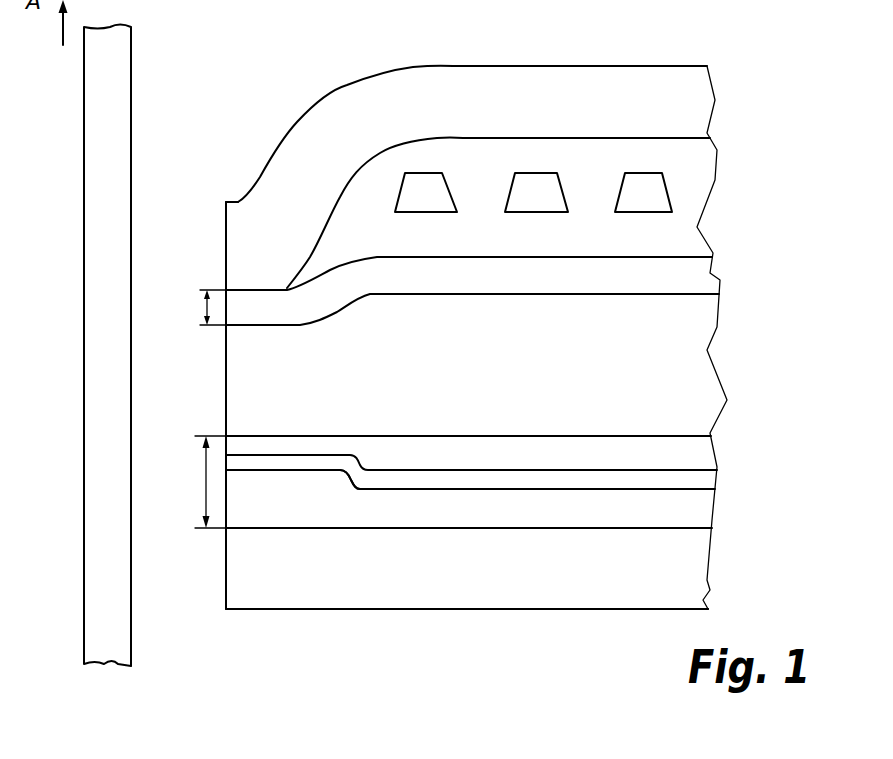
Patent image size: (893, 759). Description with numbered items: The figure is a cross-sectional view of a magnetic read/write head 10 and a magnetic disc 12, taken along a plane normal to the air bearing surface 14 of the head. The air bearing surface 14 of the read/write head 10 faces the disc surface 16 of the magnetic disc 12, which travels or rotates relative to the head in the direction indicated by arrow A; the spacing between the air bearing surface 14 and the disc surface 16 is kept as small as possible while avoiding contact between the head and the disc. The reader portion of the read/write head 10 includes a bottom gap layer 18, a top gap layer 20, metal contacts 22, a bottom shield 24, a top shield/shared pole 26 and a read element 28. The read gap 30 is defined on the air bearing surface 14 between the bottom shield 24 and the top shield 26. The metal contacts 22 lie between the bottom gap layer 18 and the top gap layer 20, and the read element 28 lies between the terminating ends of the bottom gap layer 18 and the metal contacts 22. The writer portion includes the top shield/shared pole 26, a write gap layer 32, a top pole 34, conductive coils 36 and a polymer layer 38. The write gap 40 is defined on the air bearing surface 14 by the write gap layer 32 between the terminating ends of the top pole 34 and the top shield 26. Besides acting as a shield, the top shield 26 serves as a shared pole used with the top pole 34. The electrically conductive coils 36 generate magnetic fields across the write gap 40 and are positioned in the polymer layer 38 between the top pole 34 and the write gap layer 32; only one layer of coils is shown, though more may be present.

The magnetic read/write head 10 is at (730, 68).
The magnetic disc 12 is at (116, 114).
The air bearing surface 14 is at (226, 218).
The disc surface 16 is at (131, 43).
The bottom gap layer 18 is at (610, 521).
The top gap layer 20 is at (613, 467).
The metal contacts 22 is at (695, 477).
The bottom shield 24 is at (613, 584).
The top shield/shared pole 26 is at (613, 386).
The read element 28 is at (272, 478).
The read gap 30 is at (197, 482).
The write gap layer 32 is at (608, 287).
The top pole 34 is at (650, 114).
The conductive coils 36 is at (440, 205).
The polymer layer 38 is at (608, 249).
The write gap 40 is at (195, 307).